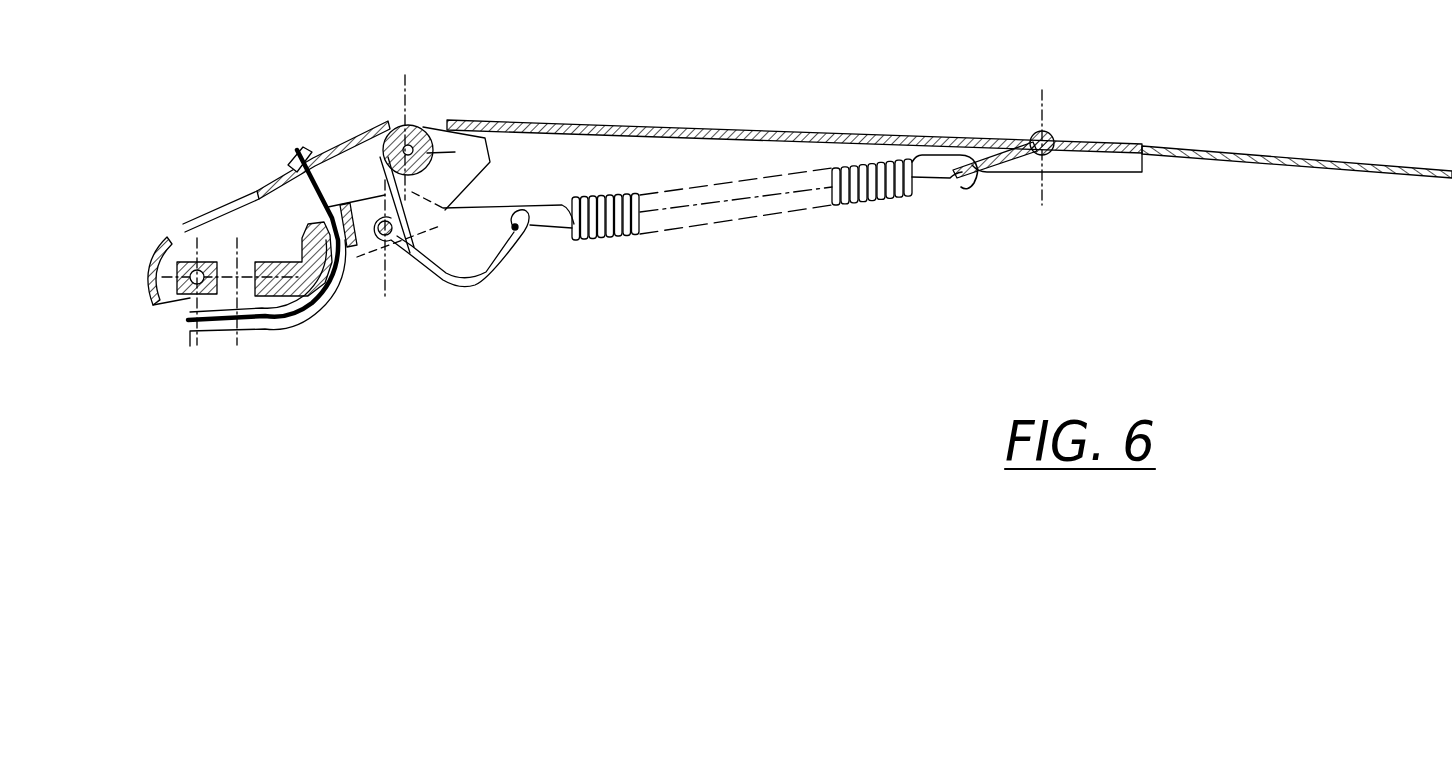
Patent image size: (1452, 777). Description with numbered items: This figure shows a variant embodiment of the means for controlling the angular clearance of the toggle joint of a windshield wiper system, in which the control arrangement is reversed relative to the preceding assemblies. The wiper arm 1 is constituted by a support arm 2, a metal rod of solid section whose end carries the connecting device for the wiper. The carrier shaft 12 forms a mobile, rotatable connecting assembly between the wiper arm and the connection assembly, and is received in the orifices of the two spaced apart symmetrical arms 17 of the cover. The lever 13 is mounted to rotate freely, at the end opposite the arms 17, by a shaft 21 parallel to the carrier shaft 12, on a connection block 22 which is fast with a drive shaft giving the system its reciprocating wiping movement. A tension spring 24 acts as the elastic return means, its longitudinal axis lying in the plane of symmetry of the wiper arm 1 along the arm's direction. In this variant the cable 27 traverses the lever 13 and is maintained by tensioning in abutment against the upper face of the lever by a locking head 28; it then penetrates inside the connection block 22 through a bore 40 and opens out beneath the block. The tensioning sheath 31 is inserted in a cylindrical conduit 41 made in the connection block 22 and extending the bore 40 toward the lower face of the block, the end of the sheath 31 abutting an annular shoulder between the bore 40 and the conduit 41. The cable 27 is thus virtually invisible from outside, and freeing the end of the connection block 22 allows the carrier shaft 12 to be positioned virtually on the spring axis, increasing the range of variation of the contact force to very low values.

The wiper arm 1 is at (880, 110).
The support arm 2 is at (1268, 158).
The carrier shaft 12 is at (425, 122).
The lever 13 is at (170, 240).
The symmetrical arms 17 is at (483, 162).
The shaft 21 is at (193, 292).
The connection block 22 is at (272, 262).
The tension spring 24 is at (612, 243).
The cable 27 is at (332, 152).
The locking head 28 is at (287, 157).
The tensioning sheath 31 is at (320, 305).
The bore 40 is at (338, 213).
The cylindrical conduit 41 is at (358, 254).